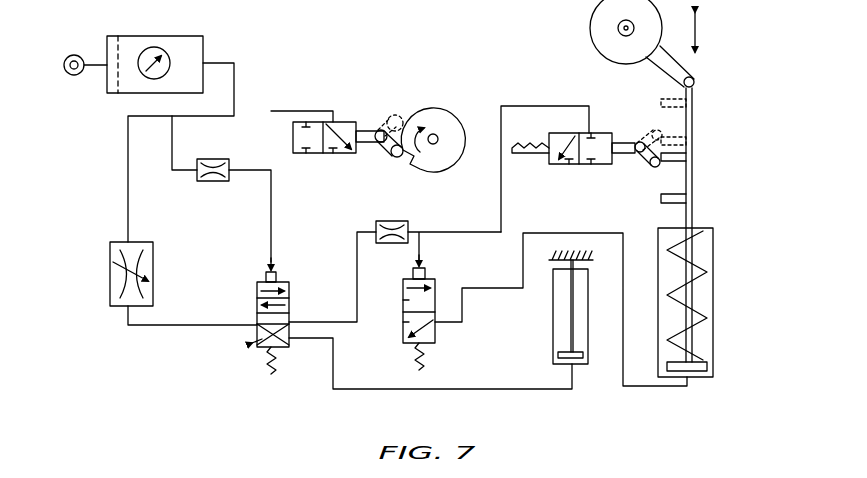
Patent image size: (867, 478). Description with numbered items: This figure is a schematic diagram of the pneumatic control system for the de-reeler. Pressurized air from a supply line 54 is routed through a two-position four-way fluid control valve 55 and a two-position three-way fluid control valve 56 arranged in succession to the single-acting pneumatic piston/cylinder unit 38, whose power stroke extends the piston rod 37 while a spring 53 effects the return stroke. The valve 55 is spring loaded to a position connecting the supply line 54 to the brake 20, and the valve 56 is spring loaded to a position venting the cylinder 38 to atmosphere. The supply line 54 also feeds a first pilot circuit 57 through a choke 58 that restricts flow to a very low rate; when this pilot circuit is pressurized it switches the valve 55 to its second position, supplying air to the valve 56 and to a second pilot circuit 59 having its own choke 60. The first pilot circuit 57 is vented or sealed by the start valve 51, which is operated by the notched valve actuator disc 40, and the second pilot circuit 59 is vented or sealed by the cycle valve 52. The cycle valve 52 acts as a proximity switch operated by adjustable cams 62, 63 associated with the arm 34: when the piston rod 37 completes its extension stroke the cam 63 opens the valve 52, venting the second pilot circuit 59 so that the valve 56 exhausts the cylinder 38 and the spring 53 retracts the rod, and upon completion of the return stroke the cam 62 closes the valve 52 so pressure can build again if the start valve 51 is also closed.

The supply line 54 is at (73, 55).
The first pilot circuit 57 is at (180, 174).
The choke 58 is at (215, 183).
The start valve 51 is at (320, 156).
The valve actuator disc 40 is at (447, 107).
The second pilot circuit 59 is at (500, 148).
The choke 60 is at (396, 210).
The two-position four-way fluid control valve 55 is at (257, 302).
The two-position three-way fluid control valve 56 is at (437, 295).
The brake 20 is at (553, 345).
The radially projecting arm 34 is at (667, 72).
The cycle valve 52 is at (580, 166).
The adjustable cam 62 is at (667, 162).
The adjustable cam 63 is at (660, 203).
The piston rod 37 is at (693, 182).
The spring 53 is at (697, 268).
The pneumatic piston/cylinder unit 38 is at (720, 308).